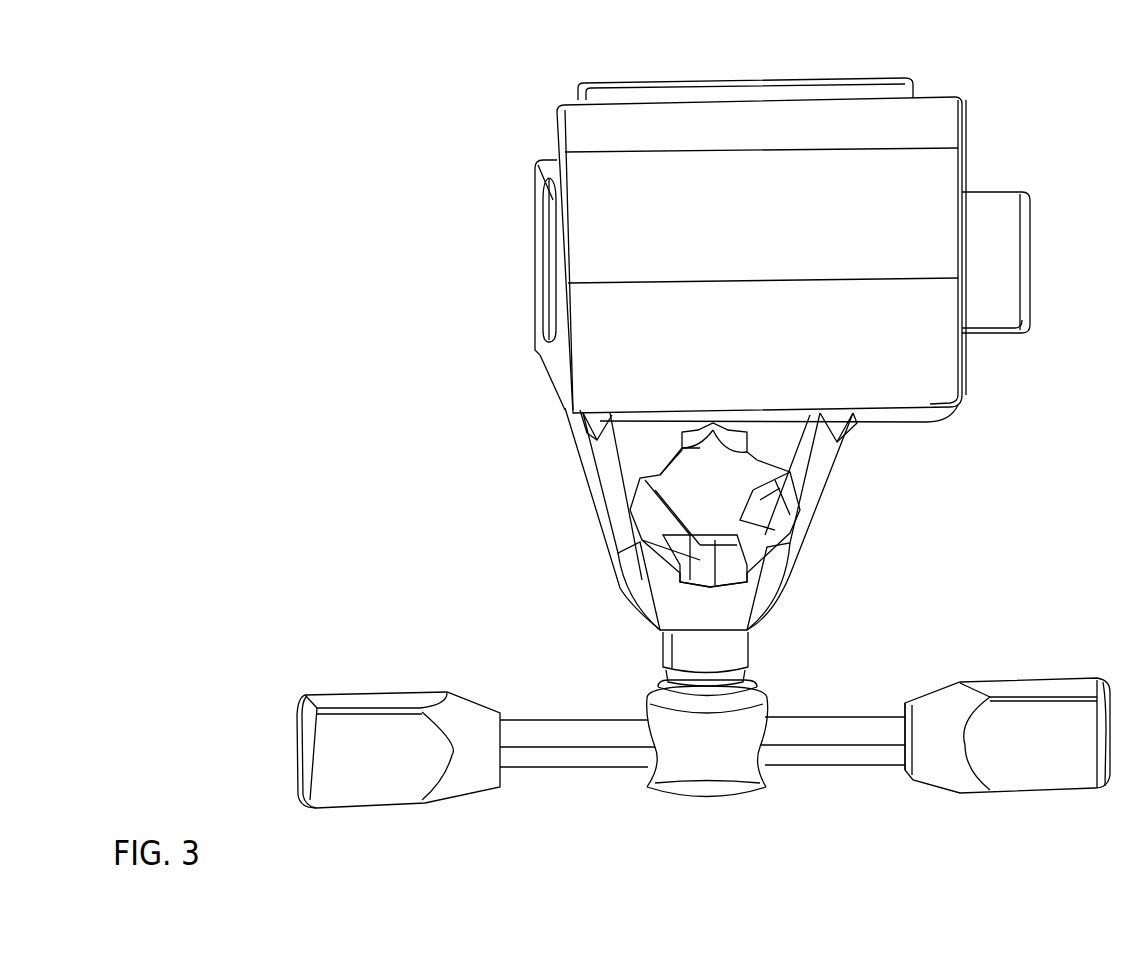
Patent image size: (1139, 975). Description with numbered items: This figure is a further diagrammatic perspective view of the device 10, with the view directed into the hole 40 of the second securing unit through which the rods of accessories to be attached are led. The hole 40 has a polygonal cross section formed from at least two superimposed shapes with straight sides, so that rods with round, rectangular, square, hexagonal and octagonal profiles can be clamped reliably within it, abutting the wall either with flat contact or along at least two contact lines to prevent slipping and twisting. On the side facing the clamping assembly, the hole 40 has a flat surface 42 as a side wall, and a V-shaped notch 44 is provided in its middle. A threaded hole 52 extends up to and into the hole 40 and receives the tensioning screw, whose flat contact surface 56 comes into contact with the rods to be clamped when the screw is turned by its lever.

The device 10 is at (985, 88).
The hole 40 is at (693, 497).
The flat surface 42 is at (740, 456).
The V-shaped notch 44 is at (720, 449).
The flat contact surface 56 is at (670, 537).
The hole 52 is at (800, 668).